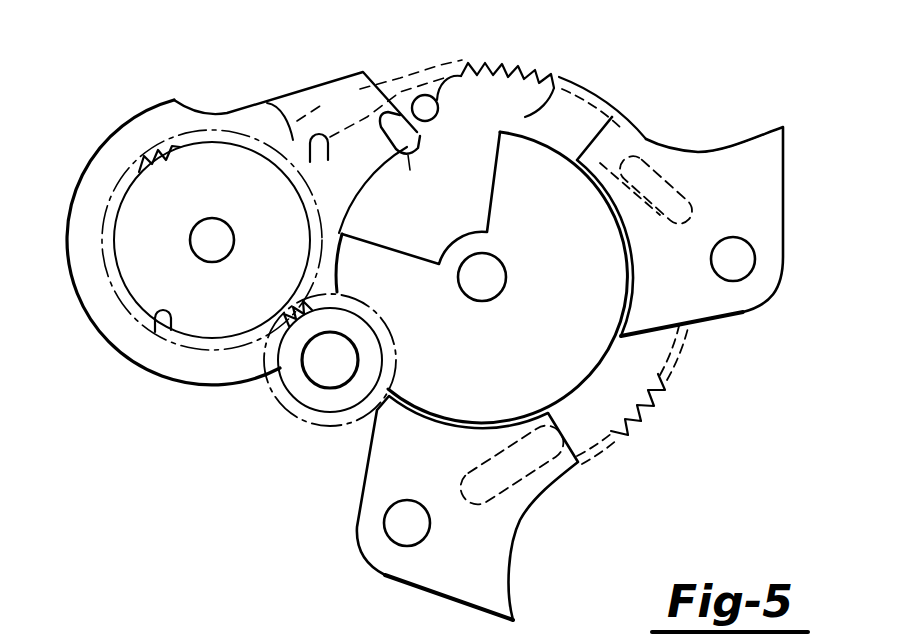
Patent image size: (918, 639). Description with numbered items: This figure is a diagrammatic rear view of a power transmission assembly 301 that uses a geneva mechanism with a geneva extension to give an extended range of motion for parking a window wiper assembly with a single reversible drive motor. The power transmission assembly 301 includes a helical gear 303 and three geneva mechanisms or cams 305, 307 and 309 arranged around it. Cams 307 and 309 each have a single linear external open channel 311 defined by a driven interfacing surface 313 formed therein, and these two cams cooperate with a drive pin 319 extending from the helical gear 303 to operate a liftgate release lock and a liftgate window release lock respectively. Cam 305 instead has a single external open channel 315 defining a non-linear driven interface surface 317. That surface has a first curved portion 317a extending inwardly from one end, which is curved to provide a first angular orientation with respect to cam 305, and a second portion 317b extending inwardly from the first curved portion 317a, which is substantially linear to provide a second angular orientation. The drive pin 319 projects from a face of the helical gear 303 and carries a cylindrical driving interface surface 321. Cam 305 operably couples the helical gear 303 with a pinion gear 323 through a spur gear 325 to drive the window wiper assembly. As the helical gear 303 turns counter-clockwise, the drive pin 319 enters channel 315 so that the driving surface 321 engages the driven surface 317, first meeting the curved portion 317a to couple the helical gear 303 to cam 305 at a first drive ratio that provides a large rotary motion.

The power transmission assembly 301 is at (650, 414).
The helical gear 303 is at (557, 73).
The cam 305 is at (115, 150).
The cam 307 is at (760, 208).
The cam 309 is at (497, 578).
The linear external open channel 311 is at (725, 148).
The driven interfacing surface 313 is at (637, 157).
The external open channel 315 is at (267, 103).
The non-linear driven interface surface 317 is at (342, 97).
The first curved portion 317a is at (414, 179).
The second portion 317b is at (318, 150).
The drive pin 319 is at (418, 103).
The cylindrical driving interface surface 321 is at (463, 68).
The pinion gear 323 is at (306, 392).
The spur gear 325 is at (162, 333).